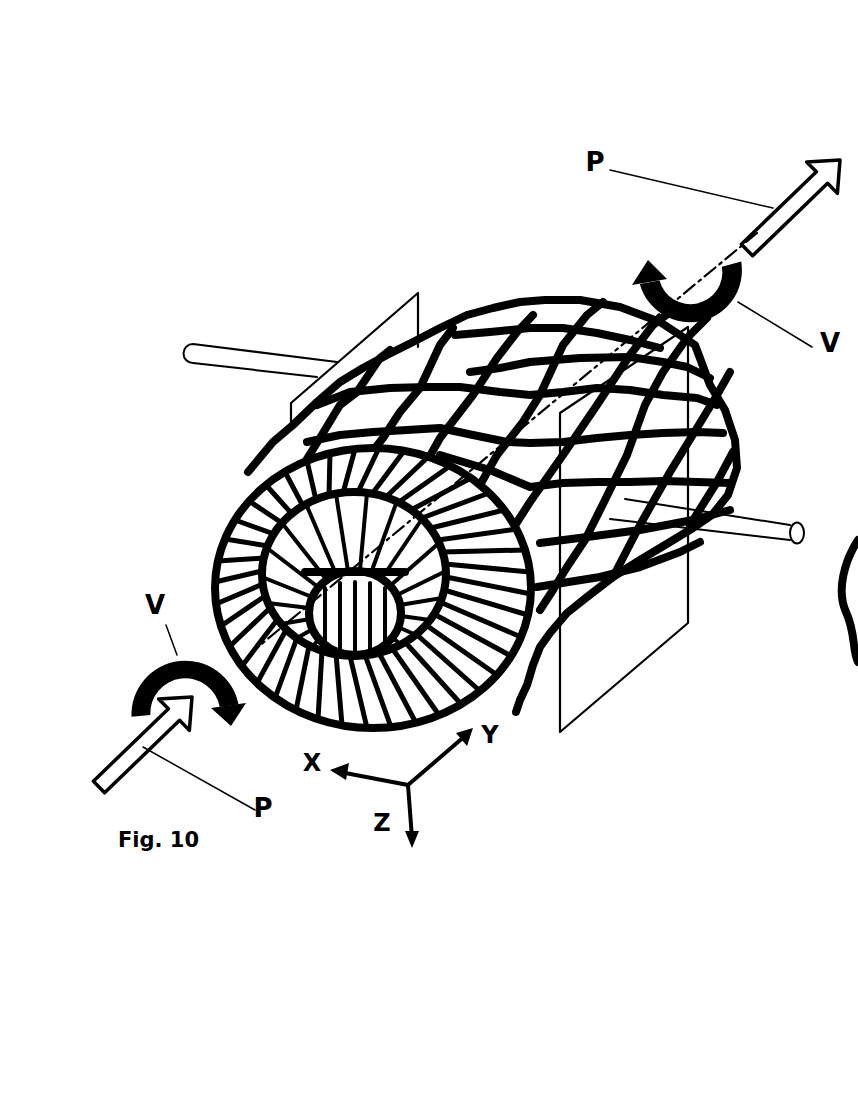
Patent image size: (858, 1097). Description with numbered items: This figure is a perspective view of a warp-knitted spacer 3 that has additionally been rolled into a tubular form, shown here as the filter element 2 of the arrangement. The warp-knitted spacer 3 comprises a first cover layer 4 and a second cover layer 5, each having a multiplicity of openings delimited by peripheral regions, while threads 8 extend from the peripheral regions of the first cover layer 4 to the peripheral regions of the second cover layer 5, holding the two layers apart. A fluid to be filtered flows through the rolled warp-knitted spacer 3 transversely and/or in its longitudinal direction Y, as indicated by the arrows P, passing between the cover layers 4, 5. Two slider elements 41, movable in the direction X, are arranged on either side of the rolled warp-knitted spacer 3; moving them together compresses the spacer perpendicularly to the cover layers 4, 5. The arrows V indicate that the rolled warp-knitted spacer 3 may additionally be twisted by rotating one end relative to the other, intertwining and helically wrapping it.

The stent / braided prosthesis 2 is at (553, 427).
The warp-knitted spacer 3 is at (473, 313).
The first cover layer 4 is at (477, 600).
The second cover layer 5 is at (857, 495).
The threads 8 is at (502, 682).
The slider elements 41 is at (717, 707).